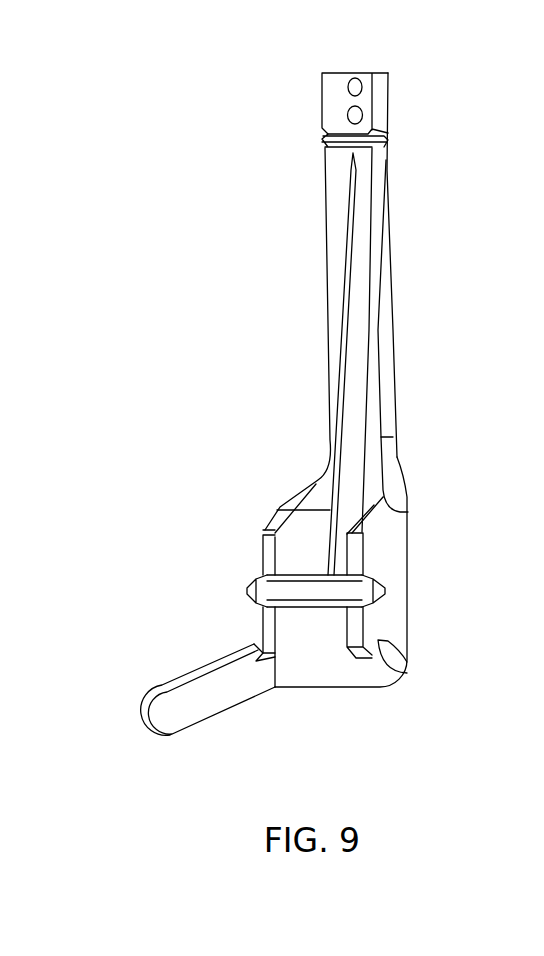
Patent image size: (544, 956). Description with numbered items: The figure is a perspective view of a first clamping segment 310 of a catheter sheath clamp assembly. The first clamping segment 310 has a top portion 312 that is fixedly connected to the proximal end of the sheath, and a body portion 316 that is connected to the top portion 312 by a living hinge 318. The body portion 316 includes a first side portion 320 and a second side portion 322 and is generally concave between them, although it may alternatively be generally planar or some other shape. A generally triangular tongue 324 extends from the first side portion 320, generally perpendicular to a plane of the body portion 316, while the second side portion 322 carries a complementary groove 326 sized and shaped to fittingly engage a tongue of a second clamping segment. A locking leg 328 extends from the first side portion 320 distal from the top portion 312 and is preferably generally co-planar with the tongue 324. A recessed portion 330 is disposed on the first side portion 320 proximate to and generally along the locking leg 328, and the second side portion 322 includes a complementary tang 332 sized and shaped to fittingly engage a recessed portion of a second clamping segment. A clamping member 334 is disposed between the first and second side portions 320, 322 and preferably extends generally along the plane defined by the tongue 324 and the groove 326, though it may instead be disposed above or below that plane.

The first clamping segment 310 is at (219, 229).
The top portion 312 is at (400, 77).
The living hinge 318 is at (405, 134).
The first side portion 320 is at (304, 472).
The second side portion 322 is at (420, 464).
The body portion 316 is at (420, 541).
The clamping member 334 is at (303, 566).
The tongue 324 is at (238, 583).
The groove 326 is at (401, 598).
The locking leg 328 is at (135, 700).
The recessed portion 330 is at (275, 667).
The tang 332 is at (395, 652).